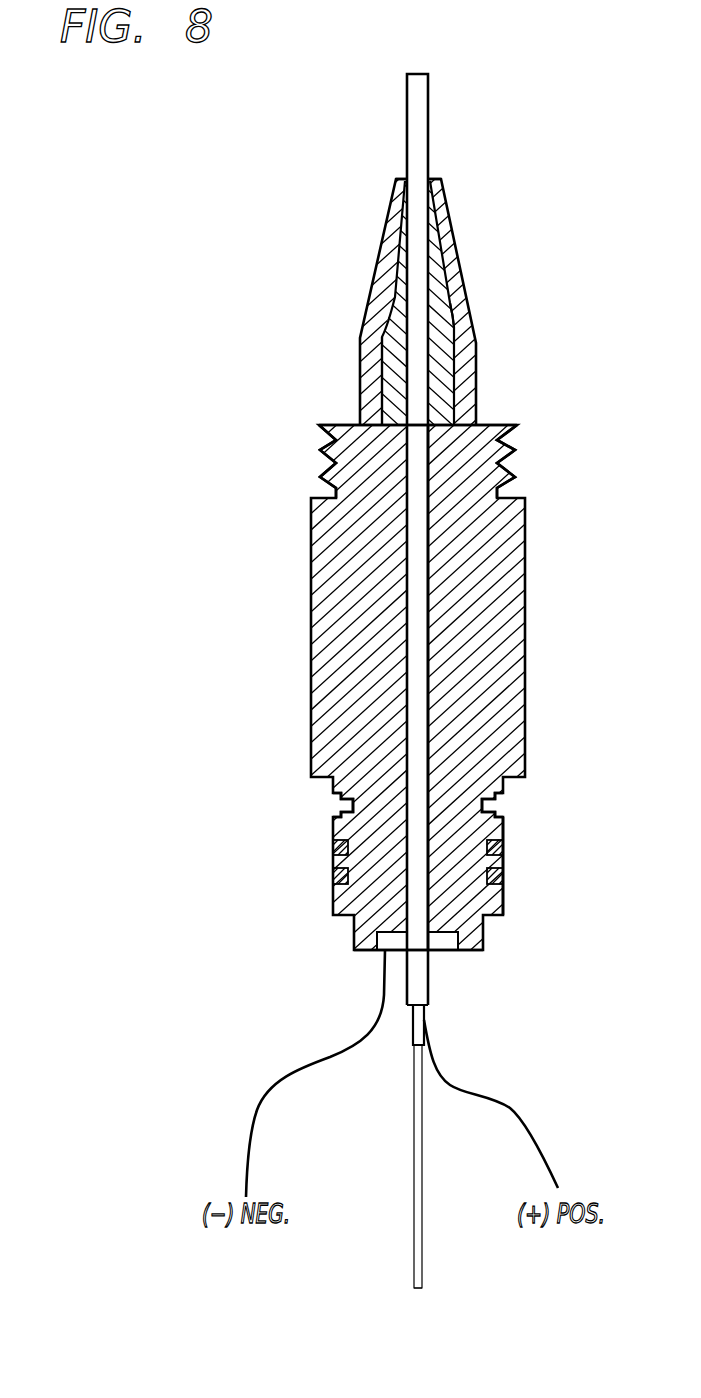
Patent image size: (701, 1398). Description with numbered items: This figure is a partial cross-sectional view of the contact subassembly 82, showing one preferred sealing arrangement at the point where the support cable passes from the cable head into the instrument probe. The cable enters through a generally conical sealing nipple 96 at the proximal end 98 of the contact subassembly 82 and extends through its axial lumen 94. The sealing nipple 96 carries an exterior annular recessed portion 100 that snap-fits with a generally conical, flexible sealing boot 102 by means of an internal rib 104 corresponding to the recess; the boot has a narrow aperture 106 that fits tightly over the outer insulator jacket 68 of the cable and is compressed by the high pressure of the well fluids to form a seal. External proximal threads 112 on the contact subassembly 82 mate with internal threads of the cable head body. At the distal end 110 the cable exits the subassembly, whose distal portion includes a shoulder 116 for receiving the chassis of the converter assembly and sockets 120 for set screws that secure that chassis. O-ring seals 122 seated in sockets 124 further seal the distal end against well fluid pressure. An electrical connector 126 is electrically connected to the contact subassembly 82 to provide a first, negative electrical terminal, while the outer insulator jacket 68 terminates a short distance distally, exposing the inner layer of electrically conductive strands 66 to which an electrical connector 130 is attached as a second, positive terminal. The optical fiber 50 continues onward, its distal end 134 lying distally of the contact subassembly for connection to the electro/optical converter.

The optical fiber 50 is at (418, 1197).
The inner layer of electrically conductive strands 66 is at (420, 1017).
The outer insulator jacket 68 is at (410, 604).
The contact subassembly 82 is at (311, 562).
The axial lumen 94 is at (422, 580).
The sealing nipple 96 is at (393, 346).
The proximal end 98 is at (500, 425).
The exterior annular recessed portion 100 is at (383, 377).
The sealing boot 102 is at (440, 199).
The internal rib 104 is at (444, 342).
The narrow aperture 106 is at (400, 174).
The distal end 110 is at (482, 958).
The external proximal threads 112 is at (513, 462).
The shoulder 116 is at (503, 825).
The sockets for set screws 120 is at (487, 802).
The O-ring seals 122 is at (503, 850).
The sockets 124 is at (333, 847).
The electrical connector 126 is at (247, 1143).
The electrical connector 130 is at (520, 1125).
The distal end of the optical fiber 134 is at (432, 1292).